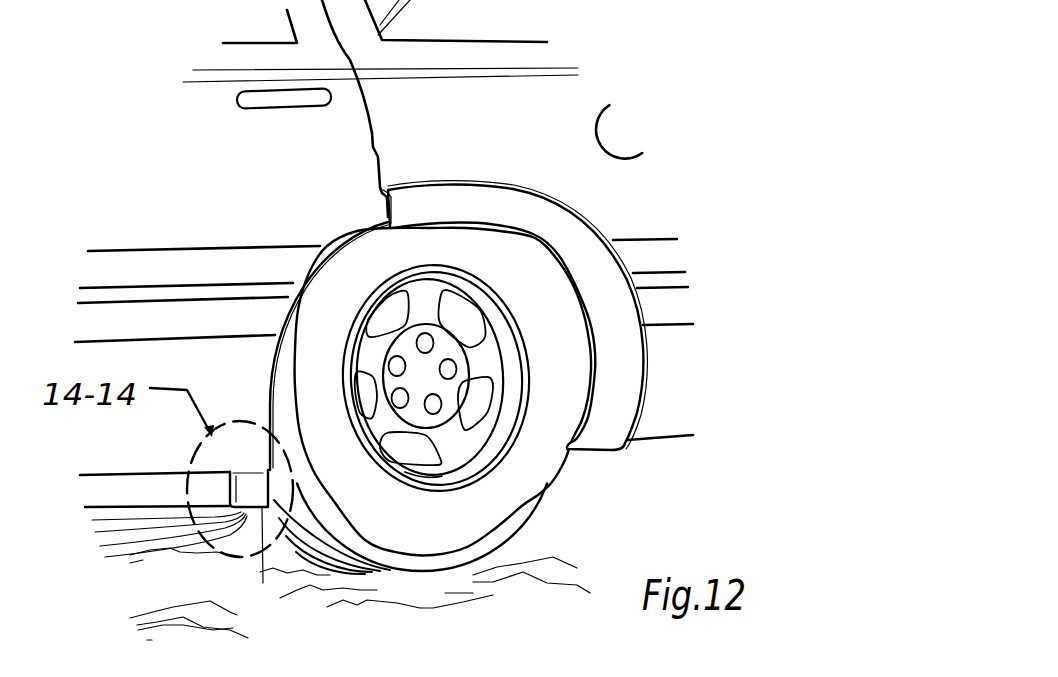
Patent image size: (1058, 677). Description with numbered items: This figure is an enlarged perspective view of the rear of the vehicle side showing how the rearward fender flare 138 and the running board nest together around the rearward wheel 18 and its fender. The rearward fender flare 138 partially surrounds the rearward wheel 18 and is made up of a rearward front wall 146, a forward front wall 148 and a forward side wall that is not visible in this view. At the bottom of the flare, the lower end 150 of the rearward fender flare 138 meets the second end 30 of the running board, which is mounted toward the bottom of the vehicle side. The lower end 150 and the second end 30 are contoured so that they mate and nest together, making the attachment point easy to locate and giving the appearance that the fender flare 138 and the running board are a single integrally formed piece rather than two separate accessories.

The rearward wheel 18 is at (527, 492).
The second end of the running board 30 is at (263, 583).
The rearward fender flare 138 is at (532, 285).
The rearward front wall 146 is at (578, 236).
The forward front wall 148 is at (338, 232).
The lower end of the rearward fender flare 150 is at (247, 493).